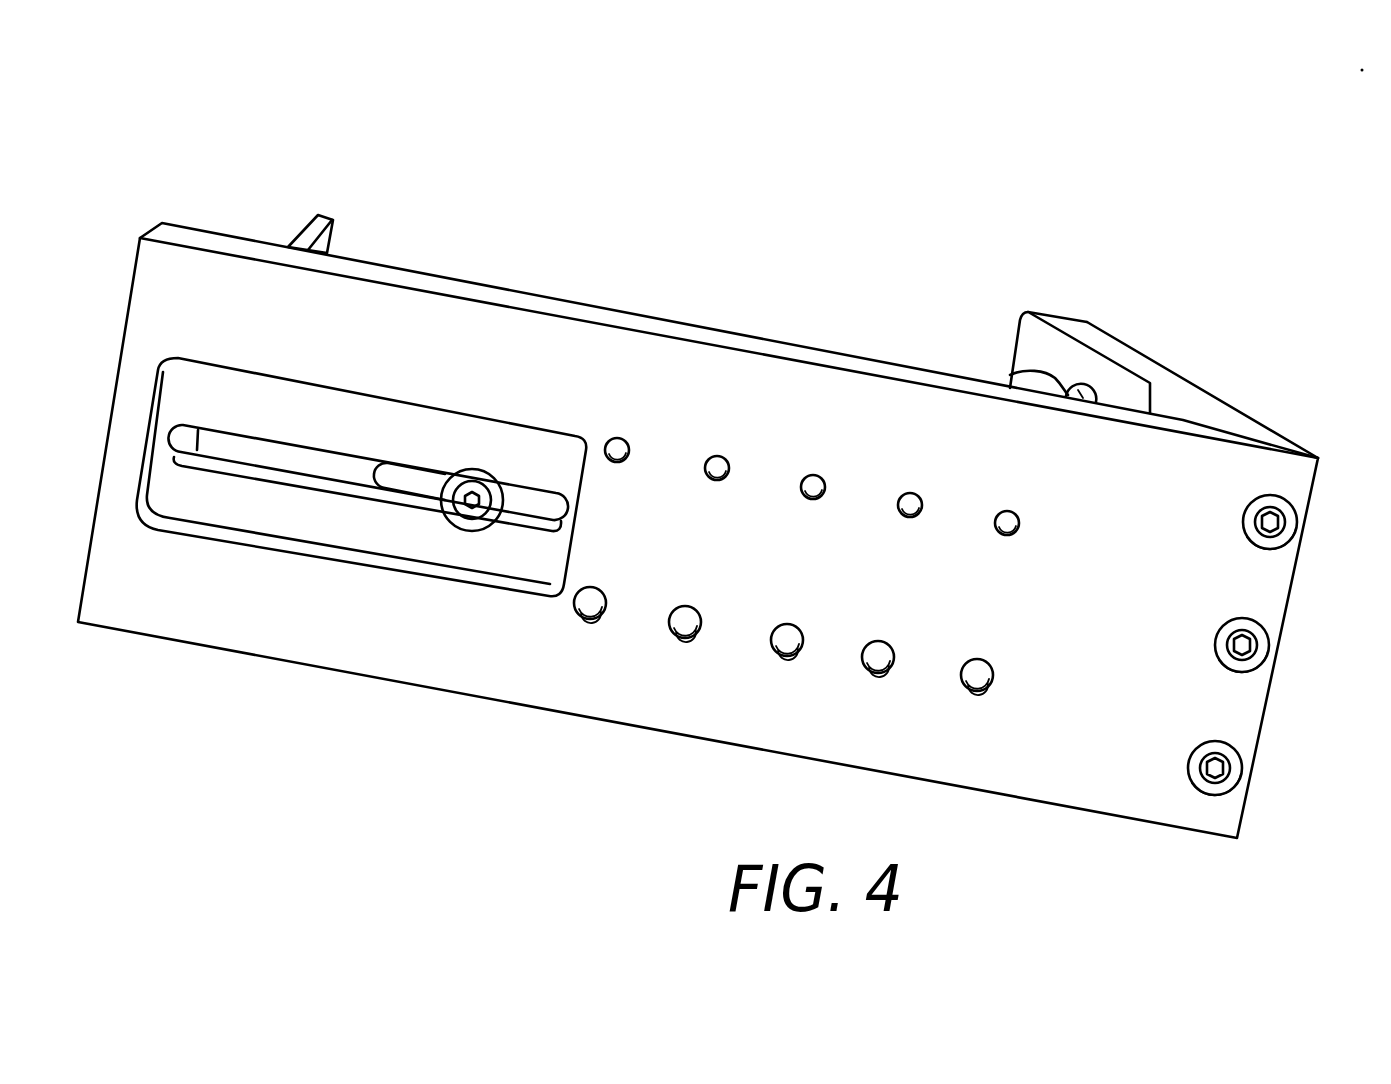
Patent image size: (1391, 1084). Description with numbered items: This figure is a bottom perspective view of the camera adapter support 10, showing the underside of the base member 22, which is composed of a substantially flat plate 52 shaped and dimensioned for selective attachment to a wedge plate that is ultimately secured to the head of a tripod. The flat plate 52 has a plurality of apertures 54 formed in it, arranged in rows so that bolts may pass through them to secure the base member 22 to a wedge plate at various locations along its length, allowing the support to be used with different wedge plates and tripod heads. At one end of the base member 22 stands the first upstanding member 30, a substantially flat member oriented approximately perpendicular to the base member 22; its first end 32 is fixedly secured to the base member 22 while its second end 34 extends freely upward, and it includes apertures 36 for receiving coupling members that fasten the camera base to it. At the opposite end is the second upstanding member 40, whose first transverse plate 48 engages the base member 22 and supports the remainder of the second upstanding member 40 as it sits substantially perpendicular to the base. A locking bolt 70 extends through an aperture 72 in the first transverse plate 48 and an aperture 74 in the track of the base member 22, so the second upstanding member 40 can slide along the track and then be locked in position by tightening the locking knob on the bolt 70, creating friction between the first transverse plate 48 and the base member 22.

The camera adapter support 10 is at (229, 778).
The base member 22 is at (521, 704).
The first upstanding member 30 is at (1023, 309).
The first end 32 is at (1250, 425).
The second end 34 is at (1077, 320).
The apertures 36 is at (1010, 374).
The second upstanding member 40 is at (298, 228).
The first transverse plate 48 is at (225, 447).
The substantially flat plate 52 is at (510, 327).
The apertures 54 is at (617, 450).
The bolt 70 is at (460, 513).
The aperture 72 is at (377, 473).
The aperture 74 is at (303, 478).